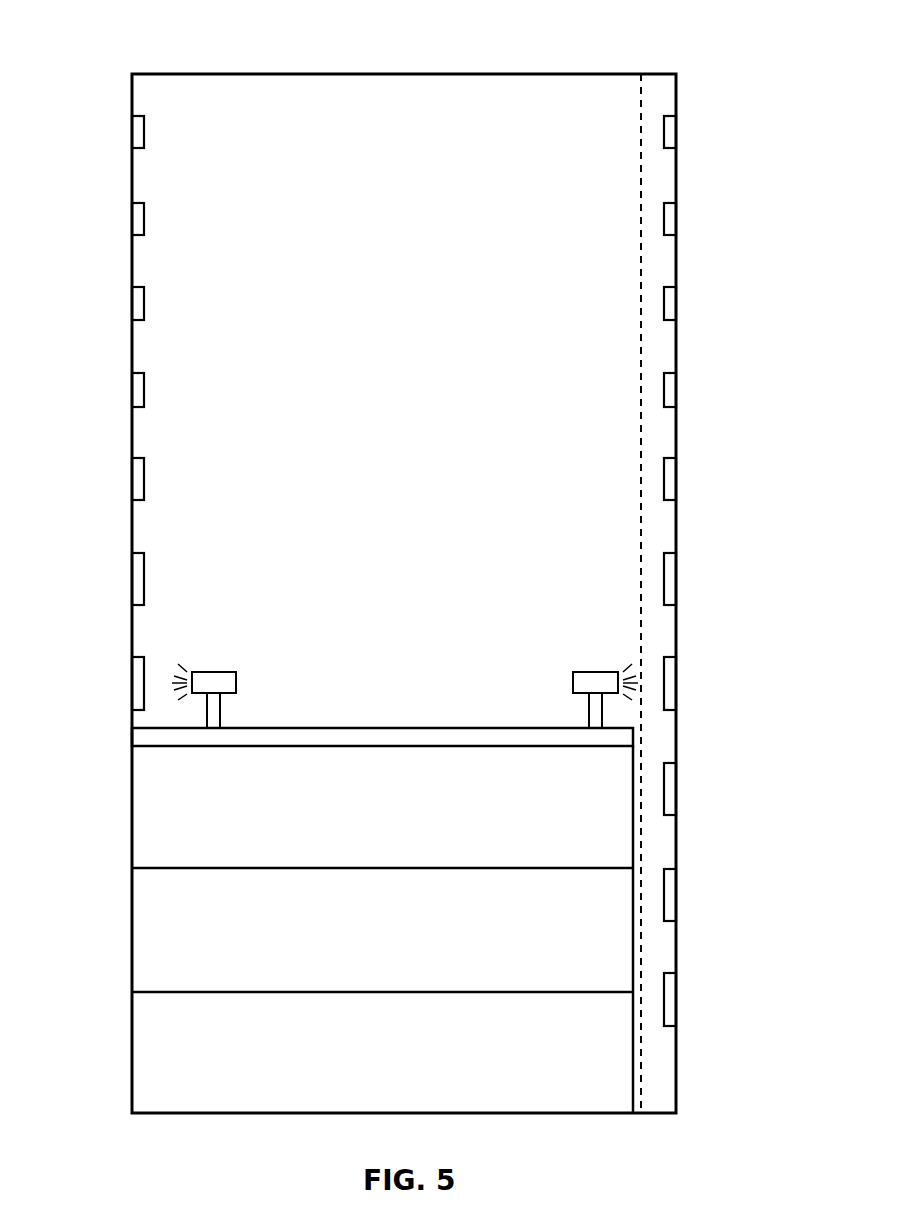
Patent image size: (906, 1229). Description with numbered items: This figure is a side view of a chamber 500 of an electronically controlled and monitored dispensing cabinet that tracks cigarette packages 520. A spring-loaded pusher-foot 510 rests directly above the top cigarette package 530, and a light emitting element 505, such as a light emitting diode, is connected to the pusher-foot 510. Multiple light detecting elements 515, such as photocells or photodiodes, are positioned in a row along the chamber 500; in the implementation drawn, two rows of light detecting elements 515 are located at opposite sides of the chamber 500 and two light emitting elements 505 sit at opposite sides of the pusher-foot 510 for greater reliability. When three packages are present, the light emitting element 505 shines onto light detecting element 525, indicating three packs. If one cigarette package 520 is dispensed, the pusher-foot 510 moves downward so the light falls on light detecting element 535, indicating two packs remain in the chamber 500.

The chamber 500 is at (352, 88).
The light emitting element 505 is at (226, 684).
The spring-loaded pusher-foot 510 is at (157, 740).
The light detecting elements 515 is at (146, 120).
The cigarette packages 520 is at (143, 1067).
The light detecting element 525 is at (146, 662).
The top cigarette package 530 is at (143, 848).
The light detecting element 535 is at (670, 790).